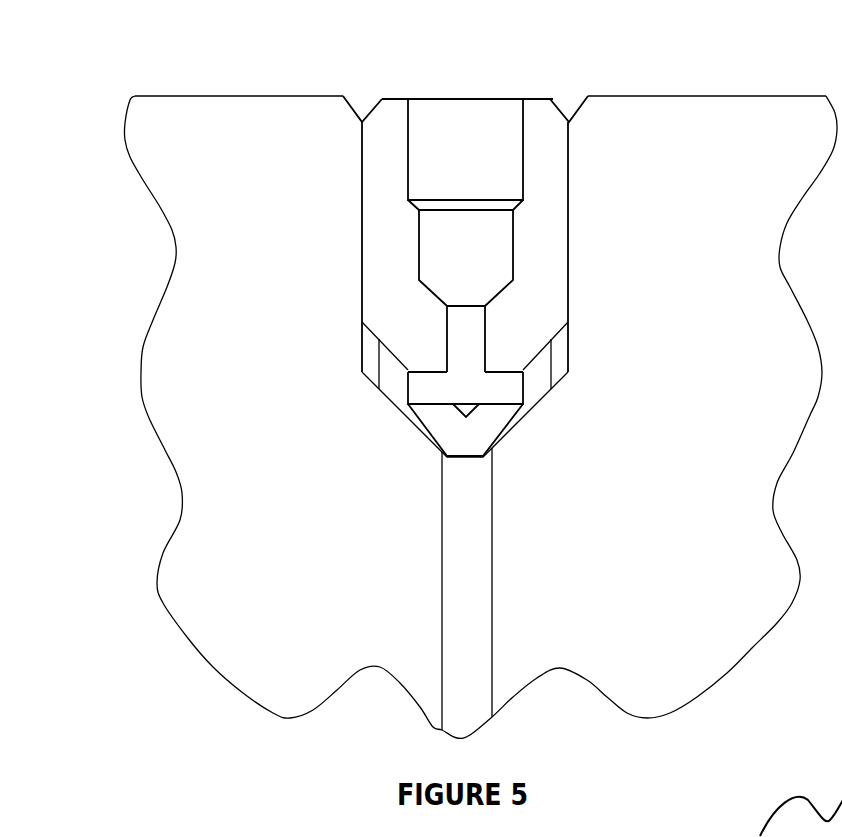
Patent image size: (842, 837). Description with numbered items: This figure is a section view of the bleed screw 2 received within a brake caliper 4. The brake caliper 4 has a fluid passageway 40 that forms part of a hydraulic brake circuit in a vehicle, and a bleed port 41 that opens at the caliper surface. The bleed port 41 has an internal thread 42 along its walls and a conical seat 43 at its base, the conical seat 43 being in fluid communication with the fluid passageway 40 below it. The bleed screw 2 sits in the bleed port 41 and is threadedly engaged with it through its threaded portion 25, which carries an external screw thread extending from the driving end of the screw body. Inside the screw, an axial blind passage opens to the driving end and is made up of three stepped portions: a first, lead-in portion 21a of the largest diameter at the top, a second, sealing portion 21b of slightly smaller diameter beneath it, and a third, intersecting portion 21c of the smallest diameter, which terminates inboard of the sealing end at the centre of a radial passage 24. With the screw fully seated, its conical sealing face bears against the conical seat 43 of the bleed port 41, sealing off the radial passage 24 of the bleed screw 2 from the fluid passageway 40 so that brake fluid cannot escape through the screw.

The bleed screw 2 is at (507, 88).
The brake caliper 4 is at (680, 287).
The bleed port 41 is at (363, 116).
The first, lead-in portion 21a is at (489, 168).
The second, sealing portion 21b is at (490, 261).
The third, intersecting portion 21c is at (447, 328).
The threaded portion 25 is at (405, 258).
The radial passage 24 is at (436, 404).
The internal thread 42 is at (566, 358).
The conical seat 43 is at (503, 433).
The fluid passageway 40 is at (492, 563).